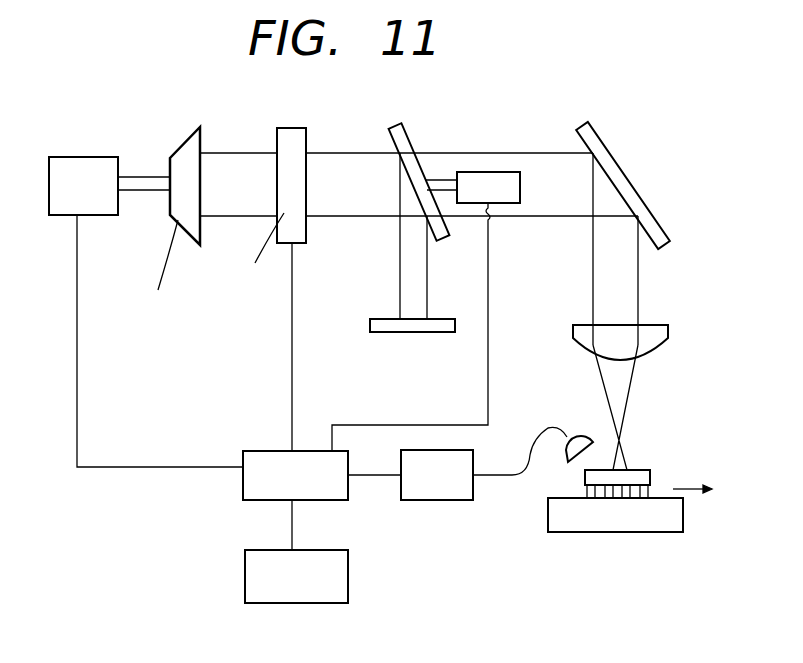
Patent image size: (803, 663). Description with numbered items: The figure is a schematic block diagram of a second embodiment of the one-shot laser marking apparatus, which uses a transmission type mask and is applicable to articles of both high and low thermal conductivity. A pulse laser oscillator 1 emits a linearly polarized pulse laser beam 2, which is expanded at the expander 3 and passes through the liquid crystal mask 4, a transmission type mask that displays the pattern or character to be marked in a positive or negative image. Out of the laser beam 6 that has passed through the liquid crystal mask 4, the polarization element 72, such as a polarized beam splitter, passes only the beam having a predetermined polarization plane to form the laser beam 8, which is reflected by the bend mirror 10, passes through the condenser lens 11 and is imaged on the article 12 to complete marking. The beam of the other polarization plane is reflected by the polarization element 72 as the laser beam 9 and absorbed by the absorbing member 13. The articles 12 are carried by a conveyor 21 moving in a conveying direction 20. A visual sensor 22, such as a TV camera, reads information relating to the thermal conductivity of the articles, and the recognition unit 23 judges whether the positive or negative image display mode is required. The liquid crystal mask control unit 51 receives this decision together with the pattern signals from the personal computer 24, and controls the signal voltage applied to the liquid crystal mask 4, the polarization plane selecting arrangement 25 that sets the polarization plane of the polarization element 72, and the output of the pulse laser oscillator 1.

The pulse laser oscillator 1 is at (91, 157).
The pulse laser beam 2 is at (135, 193).
The expander 3 is at (190, 138).
The liquid crystal mask 4 is at (287, 128).
The laser beam 6 is at (320, 217).
The laser beam 8 is at (523, 152).
The polarization element 72 is at (404, 130).
The polarization plane selecting arrangement 25 is at (520, 180).
The laser beam 9 is at (427, 286).
The absorbing member 13 is at (370, 322).
The bend mirror 10 is at (670, 242).
The condenser lens 11 is at (668, 335).
The article 12 is at (632, 470).
The conveying direction 20 is at (690, 495).
The conveyor 21 is at (656, 532).
The visual sensor 22 is at (572, 434).
The recognition unit 23 is at (481, 443).
The liquid crystal mask control unit 51 is at (266, 450).
The personal computer 24 is at (348, 568).